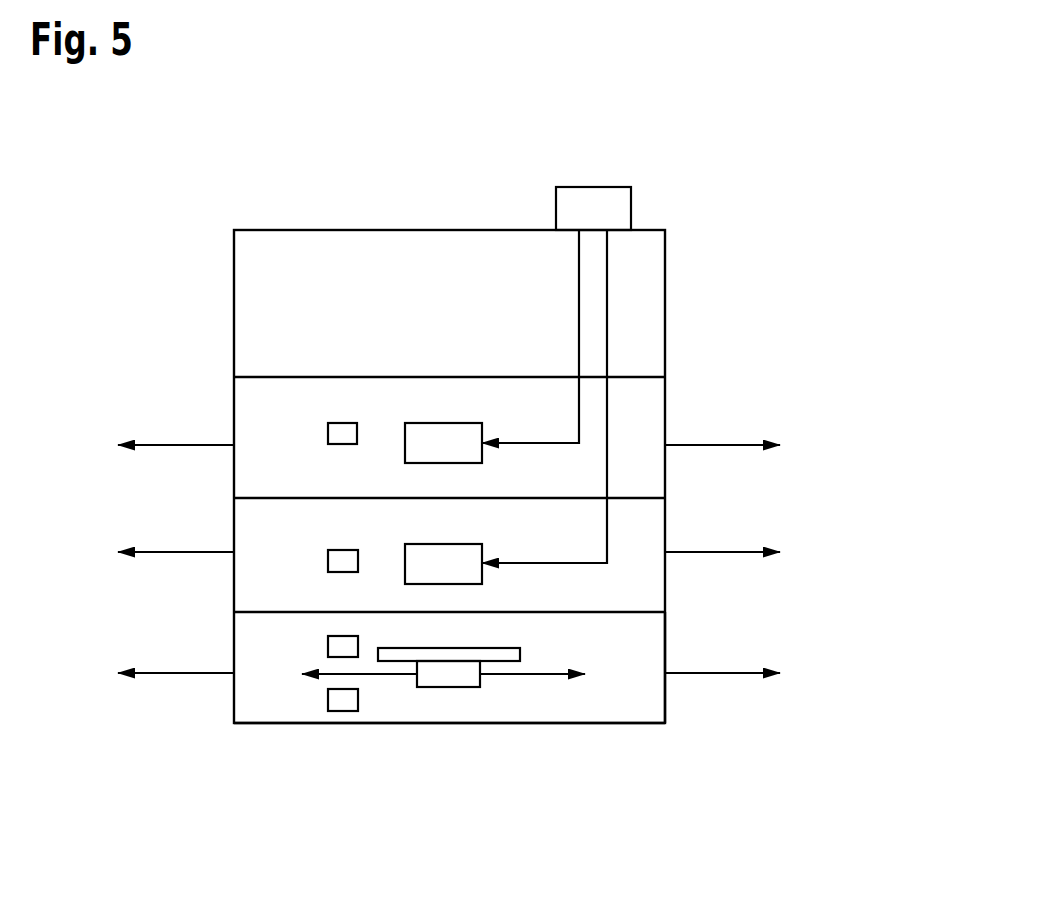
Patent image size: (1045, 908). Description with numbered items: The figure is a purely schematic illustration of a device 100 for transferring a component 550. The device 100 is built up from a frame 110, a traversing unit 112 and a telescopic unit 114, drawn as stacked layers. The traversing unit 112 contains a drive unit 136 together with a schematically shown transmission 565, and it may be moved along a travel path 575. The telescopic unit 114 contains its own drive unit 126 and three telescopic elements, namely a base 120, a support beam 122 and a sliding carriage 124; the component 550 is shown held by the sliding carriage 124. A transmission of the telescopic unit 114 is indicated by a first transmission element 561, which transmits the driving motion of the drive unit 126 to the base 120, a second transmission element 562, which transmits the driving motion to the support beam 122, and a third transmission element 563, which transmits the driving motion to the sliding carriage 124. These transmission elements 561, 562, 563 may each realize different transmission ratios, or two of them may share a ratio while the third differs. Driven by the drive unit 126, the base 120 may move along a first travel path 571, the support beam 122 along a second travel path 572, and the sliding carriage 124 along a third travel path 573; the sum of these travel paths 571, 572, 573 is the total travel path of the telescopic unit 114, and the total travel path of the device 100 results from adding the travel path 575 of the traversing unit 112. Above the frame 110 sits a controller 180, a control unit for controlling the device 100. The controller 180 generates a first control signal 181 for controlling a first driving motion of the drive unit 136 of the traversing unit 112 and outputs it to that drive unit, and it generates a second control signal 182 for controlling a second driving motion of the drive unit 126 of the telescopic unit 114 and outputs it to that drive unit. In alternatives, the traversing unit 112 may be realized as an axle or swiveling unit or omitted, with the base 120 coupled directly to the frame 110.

The device 100 is at (760, 98).
The frame 110 is at (665, 300).
The traversing unit 112 is at (665, 406).
The telescopic unit 114 is at (876, 617).
The base 120 is at (665, 517).
The support beam 122 is at (665, 640).
The sliding carriage 124 is at (447, 687).
The drive unit 126 is at (432, 584).
The drive unit 136 is at (434, 463).
The controller 180 is at (631, 210).
The first control signal 181 is at (578, 278).
The second control signal 182 is at (609, 255).
The component 550 is at (503, 648).
The first transmission element 561 is at (343, 550).
The second transmission element 562 is at (343, 636).
The third transmission element 563 is at (328, 700).
The transmission 565 is at (343, 423).
The first travel path 571 is at (160, 554).
The second travel path 572 is at (160, 675).
The third travel path 573 is at (392, 675).
The travel path 575 is at (160, 447).